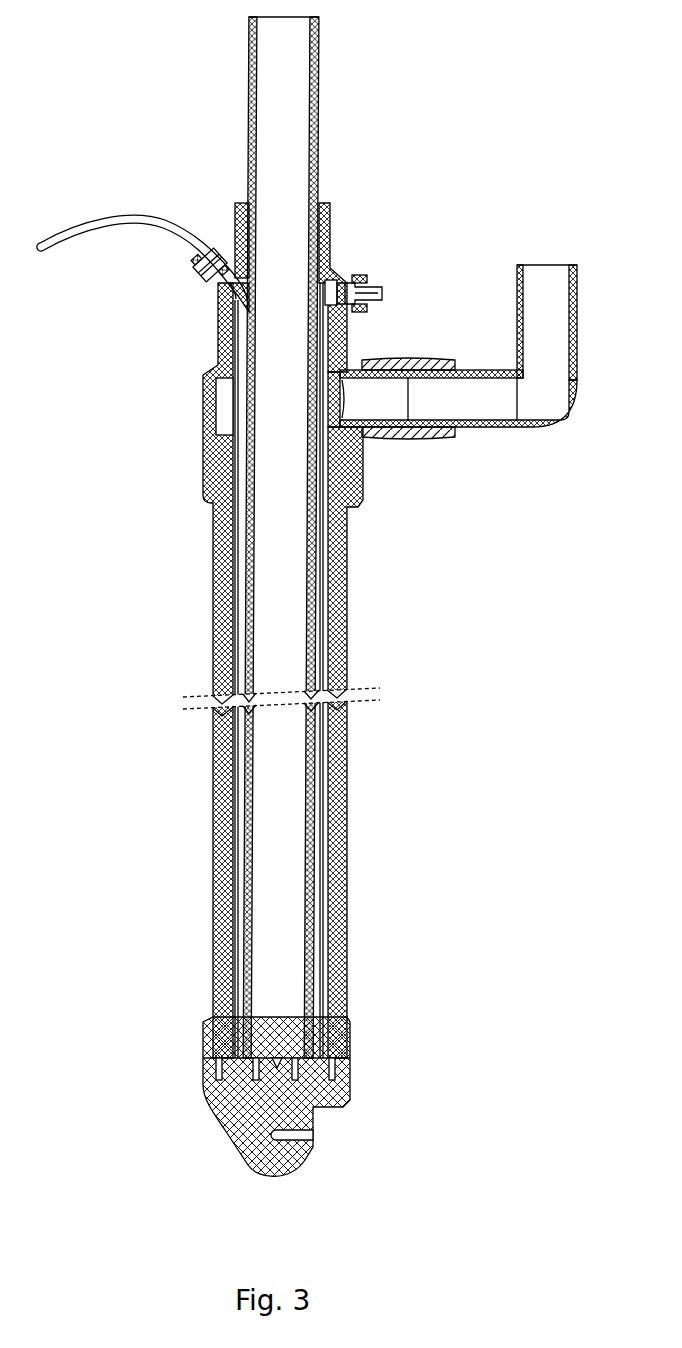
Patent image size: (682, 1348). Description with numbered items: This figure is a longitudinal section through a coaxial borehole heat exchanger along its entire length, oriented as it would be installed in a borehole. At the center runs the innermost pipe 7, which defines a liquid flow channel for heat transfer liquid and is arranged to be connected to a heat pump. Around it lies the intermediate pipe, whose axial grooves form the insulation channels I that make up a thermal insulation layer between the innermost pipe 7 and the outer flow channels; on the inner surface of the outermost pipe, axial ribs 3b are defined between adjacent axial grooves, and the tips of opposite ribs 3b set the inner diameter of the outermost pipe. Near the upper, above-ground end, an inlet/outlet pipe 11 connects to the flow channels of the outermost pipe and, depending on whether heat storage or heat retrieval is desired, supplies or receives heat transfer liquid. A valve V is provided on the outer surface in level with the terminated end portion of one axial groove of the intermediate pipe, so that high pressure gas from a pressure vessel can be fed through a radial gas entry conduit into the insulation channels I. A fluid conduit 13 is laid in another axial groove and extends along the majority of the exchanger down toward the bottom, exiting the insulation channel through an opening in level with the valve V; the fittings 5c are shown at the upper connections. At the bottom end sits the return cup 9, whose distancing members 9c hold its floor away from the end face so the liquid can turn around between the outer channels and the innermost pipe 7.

The innermost pipe 7 is at (296, 85).
The connection nut 5c is at (238, 268).
The valve V is at (368, 284).
The insulation channels I is at (321, 340).
The inlet/outlet pipe 11 is at (501, 443).
The fluid conduit 13 is at (245, 545).
The axial rib 3b is at (230, 777).
The distancing member 9c is at (218, 1059).
The return cup 9 is at (205, 1112).